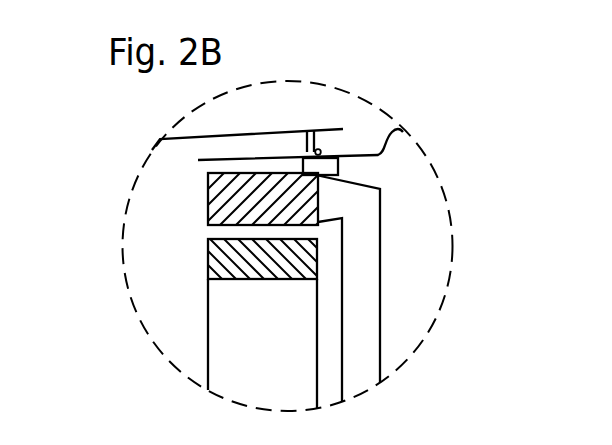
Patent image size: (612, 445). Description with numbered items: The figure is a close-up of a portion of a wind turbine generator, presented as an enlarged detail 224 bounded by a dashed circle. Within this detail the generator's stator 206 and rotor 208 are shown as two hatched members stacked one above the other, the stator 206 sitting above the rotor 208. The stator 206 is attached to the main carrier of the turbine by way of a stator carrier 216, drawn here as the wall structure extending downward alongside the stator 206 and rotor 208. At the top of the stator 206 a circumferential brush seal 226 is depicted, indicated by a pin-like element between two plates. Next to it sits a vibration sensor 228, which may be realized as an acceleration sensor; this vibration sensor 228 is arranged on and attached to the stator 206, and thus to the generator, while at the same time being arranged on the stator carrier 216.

The stator 206 is at (208, 185).
The rotor 208 is at (208, 262).
The stator carrier 216 is at (360, 293).
The enlarged detail 224 is at (443, 188).
The circumferential brush seal 226 is at (307, 130).
The vibration sensor 228 is at (340, 168).